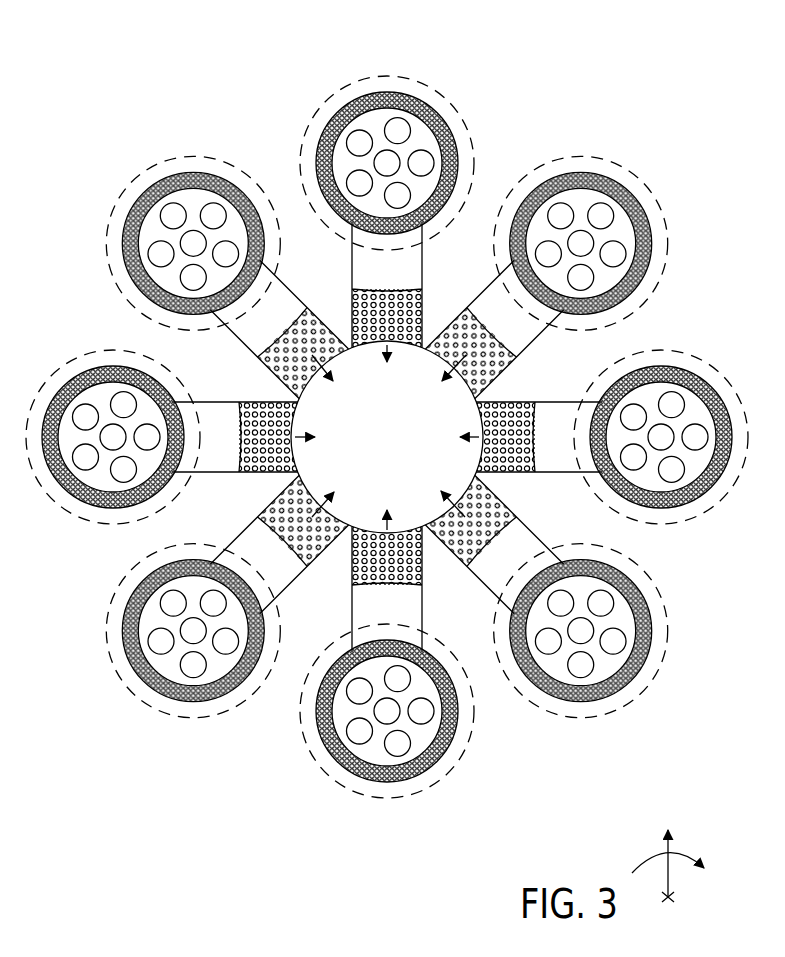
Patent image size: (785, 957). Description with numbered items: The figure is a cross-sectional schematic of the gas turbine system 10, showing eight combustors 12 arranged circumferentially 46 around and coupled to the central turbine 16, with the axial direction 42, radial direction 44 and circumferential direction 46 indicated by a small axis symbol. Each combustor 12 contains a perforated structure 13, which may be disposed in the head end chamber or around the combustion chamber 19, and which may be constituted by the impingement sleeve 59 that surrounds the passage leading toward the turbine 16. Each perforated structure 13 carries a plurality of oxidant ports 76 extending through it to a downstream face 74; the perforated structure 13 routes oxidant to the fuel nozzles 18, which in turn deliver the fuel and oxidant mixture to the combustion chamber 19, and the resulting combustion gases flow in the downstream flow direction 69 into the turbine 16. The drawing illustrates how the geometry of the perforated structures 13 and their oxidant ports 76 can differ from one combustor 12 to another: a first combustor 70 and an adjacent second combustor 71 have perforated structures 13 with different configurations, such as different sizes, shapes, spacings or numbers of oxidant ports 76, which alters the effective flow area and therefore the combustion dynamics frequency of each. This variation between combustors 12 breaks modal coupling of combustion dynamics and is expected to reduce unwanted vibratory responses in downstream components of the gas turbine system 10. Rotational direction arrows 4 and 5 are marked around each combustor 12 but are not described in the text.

The gas turbine system 10 is at (573, 52).
The combustor 12 is at (287, 127).
The perforated structure 13 is at (460, 174).
The turbine 16 is at (373, 446).
The fuel nozzle 18 is at (400, 118).
The combustion chamber 19 is at (282, 298).
The impingement sleeve 59 is at (318, 332).
The downstream flow direction 69 is at (330, 385).
The rotation direction 4 is at (198, 153).
The rotation direction 5 is at (320, 108).
The first combustor 70 is at (647, 712).
The second combustor 71 is at (383, 800).
The downstream face 74 is at (622, 195).
The oxidant ports 76 is at (612, 188).
The axial direction or axis 42 is at (676, 896).
The radial direction or axis 44 is at (660, 880).
The circumferential direction or axis 46 is at (683, 855).